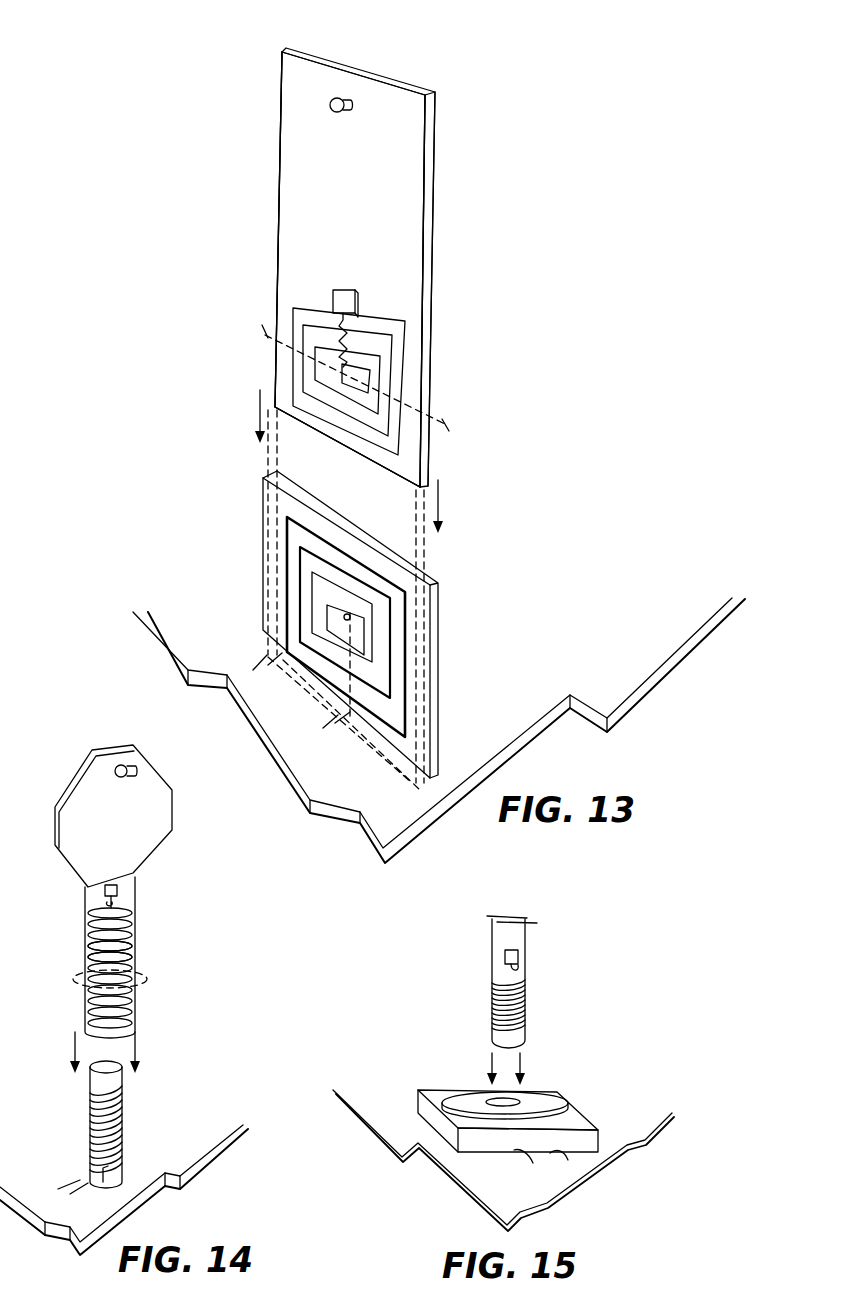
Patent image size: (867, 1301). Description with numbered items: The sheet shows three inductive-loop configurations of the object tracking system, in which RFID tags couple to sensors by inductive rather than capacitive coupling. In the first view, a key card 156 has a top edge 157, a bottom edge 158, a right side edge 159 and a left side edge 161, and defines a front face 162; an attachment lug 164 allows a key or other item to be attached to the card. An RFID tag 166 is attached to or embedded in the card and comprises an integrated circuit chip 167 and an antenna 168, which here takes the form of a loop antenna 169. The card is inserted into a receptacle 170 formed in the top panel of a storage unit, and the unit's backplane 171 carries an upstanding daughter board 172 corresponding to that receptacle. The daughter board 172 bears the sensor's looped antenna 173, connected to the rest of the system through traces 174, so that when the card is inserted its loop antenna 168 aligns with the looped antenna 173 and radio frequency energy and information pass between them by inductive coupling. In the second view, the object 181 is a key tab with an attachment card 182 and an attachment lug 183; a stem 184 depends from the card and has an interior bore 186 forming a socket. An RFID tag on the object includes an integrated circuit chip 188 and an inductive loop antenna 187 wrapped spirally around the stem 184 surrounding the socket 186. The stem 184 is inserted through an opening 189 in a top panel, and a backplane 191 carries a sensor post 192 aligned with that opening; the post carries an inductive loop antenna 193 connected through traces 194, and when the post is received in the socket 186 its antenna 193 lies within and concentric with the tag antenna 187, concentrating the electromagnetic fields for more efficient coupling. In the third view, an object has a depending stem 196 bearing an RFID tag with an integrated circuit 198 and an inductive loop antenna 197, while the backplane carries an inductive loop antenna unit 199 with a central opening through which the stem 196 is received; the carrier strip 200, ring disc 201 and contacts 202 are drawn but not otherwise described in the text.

In FIG. 13, the key card 156 is at (478, 108).
In FIG. 13, the top edge 157 is at (380, 78).
In FIG. 13, the bottom edge 158 is at (370, 460).
In FIG. 13, the right side edge 159 is at (432, 210).
In FIG. 13, the left side edge 161 is at (278, 195).
In FIG. 13, the front face 162 is at (303, 152).
In FIG. 13, the attachment lug 164 is at (332, 100).
In FIG. 13, the RFID tag 166 is at (356, 349).
In FIG. 13, the integrated circuit chip 167 is at (345, 297).
In FIG. 13, the antenna 168 is at (412, 372).
In FIG. 13, the loop antenna 169 is at (323, 390).
In FIG. 13, the receptacle 170 is at (463, 432).
In FIG. 13, the backplane 171 is at (590, 677).
In FIG. 13, the daughter board 172 is at (375, 630).
In FIG. 13, the looped antenna 173 is at (280, 548).
In FIG. 13, the traces 174 is at (263, 662).
In FIG. 14, the object 181 is at (192, 827).
In FIG. 14, the attachment card 182 is at (155, 781).
In FIG. 14, the attachment lug 183 is at (138, 772).
In FIG. 14, the stem 184 is at (131, 957).
In FIG. 14, the interior bore 186 is at (137, 950).
In FIG. 14, the inductive loop antenna 187 is at (97, 963).
In FIG. 14, the integrated circuit chip 188 is at (118, 893).
In FIG. 14, the opening 189 is at (143, 993).
In FIG. 14, the backplane 191 is at (182, 1153).
In FIG. 14, the sensor post 192 is at (120, 1146).
In FIG. 14, the inductive loop antenna 193 is at (92, 1147).
In FIG. 14, the traces 194 is at (82, 1182).
In FIG. 15, the stem 196 is at (517, 982).
In FIG. 15, the inductive loop antenna 197 is at (522, 1019).
In FIG. 15, the integrated circuit 198 is at (522, 962).
In FIG. 15, the inductive loop antenna unit 199 is at (483, 1088).
In FIG. 15, the carrier strip 200 is at (394, 1127).
In FIG. 15, the ring disc 201 is at (513, 1102).
In FIG. 15, the contacts 202 is at (533, 1163).